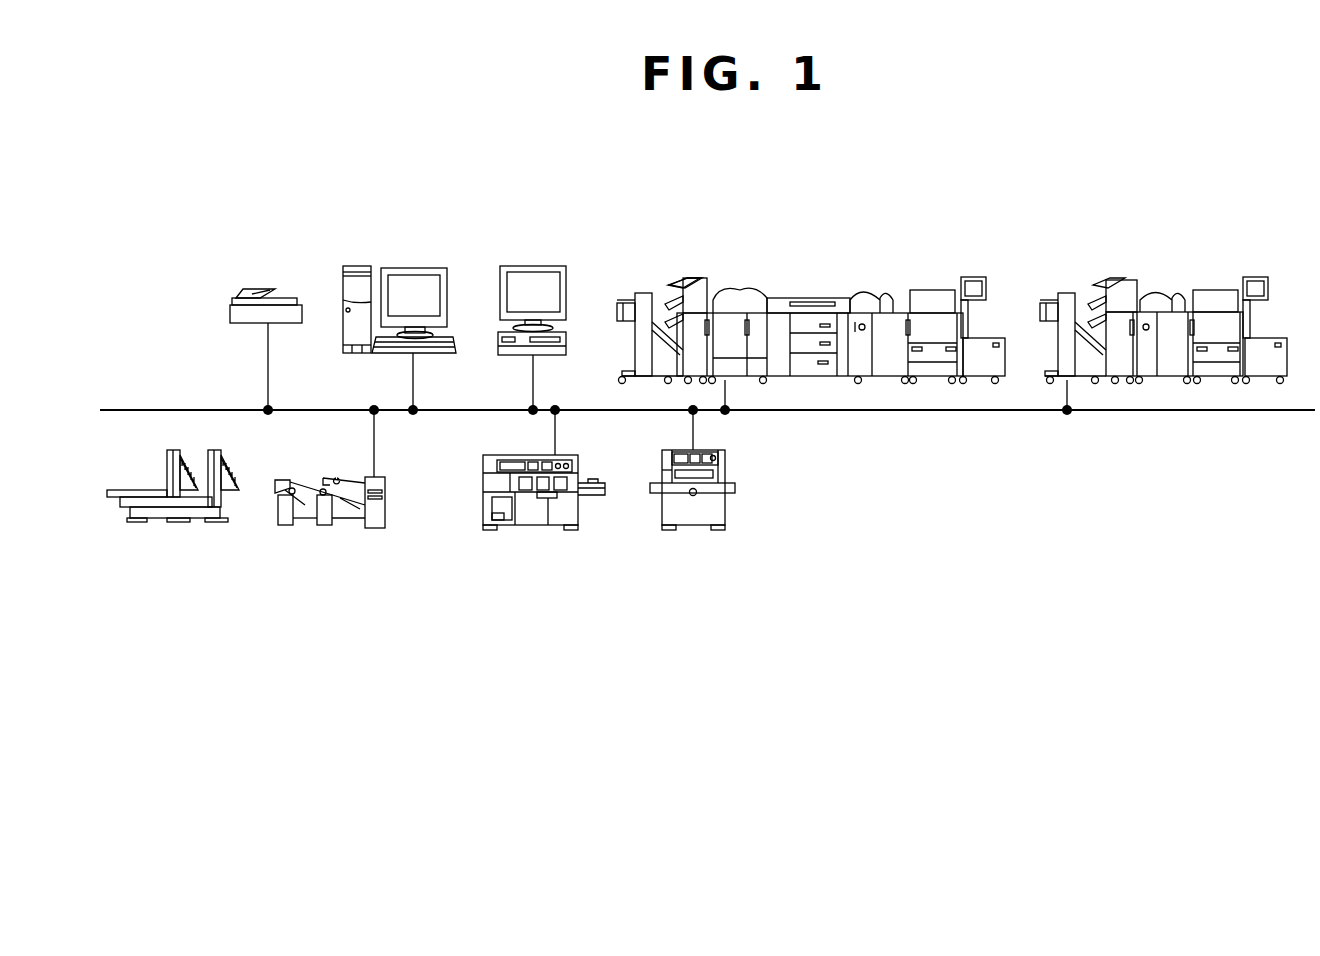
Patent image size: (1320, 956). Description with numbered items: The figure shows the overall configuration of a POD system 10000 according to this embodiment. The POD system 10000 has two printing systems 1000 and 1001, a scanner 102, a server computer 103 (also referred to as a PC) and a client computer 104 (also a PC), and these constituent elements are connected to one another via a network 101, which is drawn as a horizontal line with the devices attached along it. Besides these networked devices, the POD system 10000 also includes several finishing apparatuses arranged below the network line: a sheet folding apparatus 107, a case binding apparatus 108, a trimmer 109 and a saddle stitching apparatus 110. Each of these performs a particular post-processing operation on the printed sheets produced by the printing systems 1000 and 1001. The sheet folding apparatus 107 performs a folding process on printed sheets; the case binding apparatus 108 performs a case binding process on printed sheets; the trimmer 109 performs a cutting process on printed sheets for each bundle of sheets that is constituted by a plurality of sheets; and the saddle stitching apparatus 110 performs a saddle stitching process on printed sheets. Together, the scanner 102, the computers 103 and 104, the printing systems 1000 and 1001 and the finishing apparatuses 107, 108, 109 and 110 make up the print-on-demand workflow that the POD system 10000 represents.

The network 101 is at (151, 408).
The scanner 102 is at (256, 287).
The server computer 103 is at (395, 268).
The client computer 104 is at (524, 268).
The printing system 1000 is at (752, 286).
The printing system 1001 is at (1207, 293).
The saddle stitching apparatus 110 is at (156, 522).
The sheet folding apparatus 107 is at (338, 530).
The case binding apparatus 108 is at (536, 530).
The trimmer 109 is at (692, 530).
The POD system 10000 is at (556, 602).